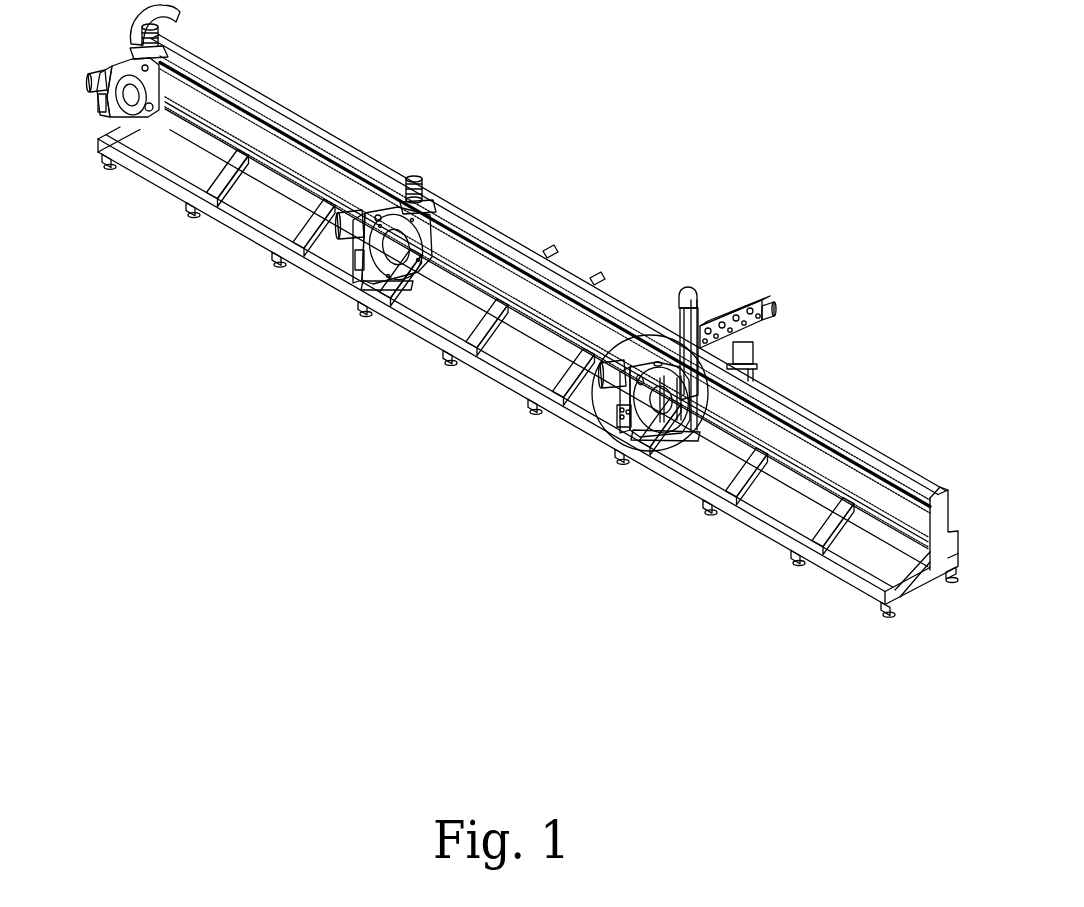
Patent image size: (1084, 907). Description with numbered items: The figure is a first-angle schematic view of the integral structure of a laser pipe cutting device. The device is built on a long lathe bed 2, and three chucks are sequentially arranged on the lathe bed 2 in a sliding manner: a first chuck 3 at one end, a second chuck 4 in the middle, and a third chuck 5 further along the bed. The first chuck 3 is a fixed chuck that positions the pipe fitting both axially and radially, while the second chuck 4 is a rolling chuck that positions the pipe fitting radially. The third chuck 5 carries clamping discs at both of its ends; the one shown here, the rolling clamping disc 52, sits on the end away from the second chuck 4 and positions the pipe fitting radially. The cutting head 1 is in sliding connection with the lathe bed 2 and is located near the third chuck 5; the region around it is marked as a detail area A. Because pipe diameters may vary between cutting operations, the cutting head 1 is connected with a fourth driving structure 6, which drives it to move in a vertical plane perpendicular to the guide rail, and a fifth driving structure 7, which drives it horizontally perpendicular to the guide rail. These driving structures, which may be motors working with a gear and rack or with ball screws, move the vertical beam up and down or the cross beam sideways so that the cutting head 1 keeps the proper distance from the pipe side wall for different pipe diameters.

The cutting head 1 is at (640, 435).
The lathe bed 2 is at (438, 283).
The first chuck 3 is at (115, 68).
The second chuck 4 is at (355, 250).
The third chuck 5 is at (531, 499).
The rolling clamping disc 52 is at (658, 440).
The fourth driving structure 6 is at (683, 288).
The fifth driving structure 7 is at (772, 318).
The detail region A is at (702, 393).